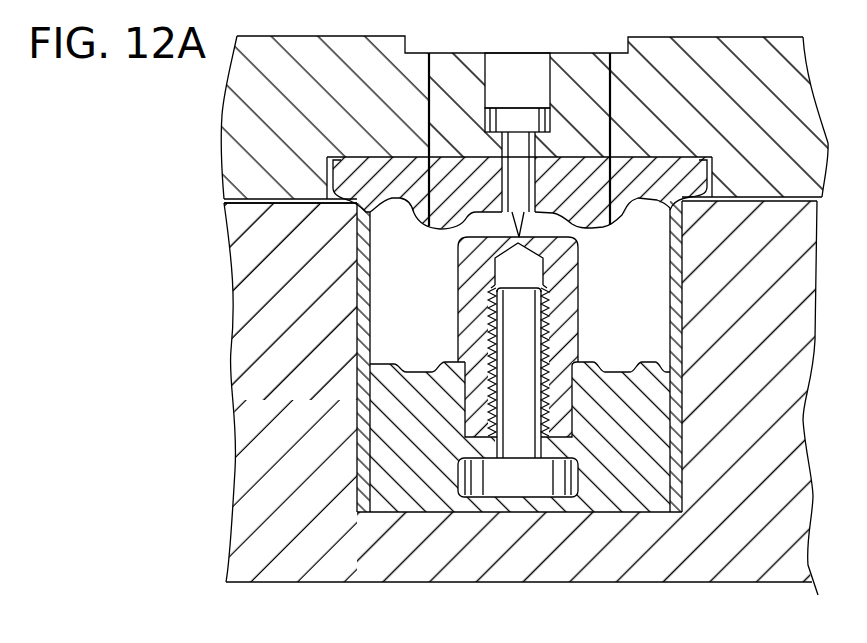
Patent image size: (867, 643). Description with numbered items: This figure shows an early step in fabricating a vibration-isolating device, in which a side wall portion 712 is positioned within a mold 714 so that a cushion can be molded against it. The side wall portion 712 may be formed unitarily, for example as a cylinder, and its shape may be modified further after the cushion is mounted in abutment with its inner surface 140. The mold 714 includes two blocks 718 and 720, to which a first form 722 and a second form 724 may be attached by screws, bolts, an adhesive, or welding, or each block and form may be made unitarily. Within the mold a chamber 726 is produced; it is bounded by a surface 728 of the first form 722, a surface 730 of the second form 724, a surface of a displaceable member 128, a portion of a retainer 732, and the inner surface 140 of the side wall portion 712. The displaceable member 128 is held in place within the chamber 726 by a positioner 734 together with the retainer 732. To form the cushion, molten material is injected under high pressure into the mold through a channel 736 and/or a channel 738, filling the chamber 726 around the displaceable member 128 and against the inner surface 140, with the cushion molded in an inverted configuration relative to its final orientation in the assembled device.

The block 718 is at (234, 121).
The channel 736 is at (432, 83).
The channel 738 is at (604, 83).
The retainer 732 is at (522, 220).
The first form 722 is at (388, 172).
The surface 728 is at (407, 217).
The side wall portion 712 is at (362, 233).
The inner surface 140 is at (667, 277).
The mold 714 is at (226, 271).
The block 720 is at (248, 392).
The chamber 726 is at (447, 313).
The surface 730 is at (520, 414).
The displaceable member 128 is at (572, 320).
The positioner 734 is at (520, 397).
The second form 724 is at (430, 505).